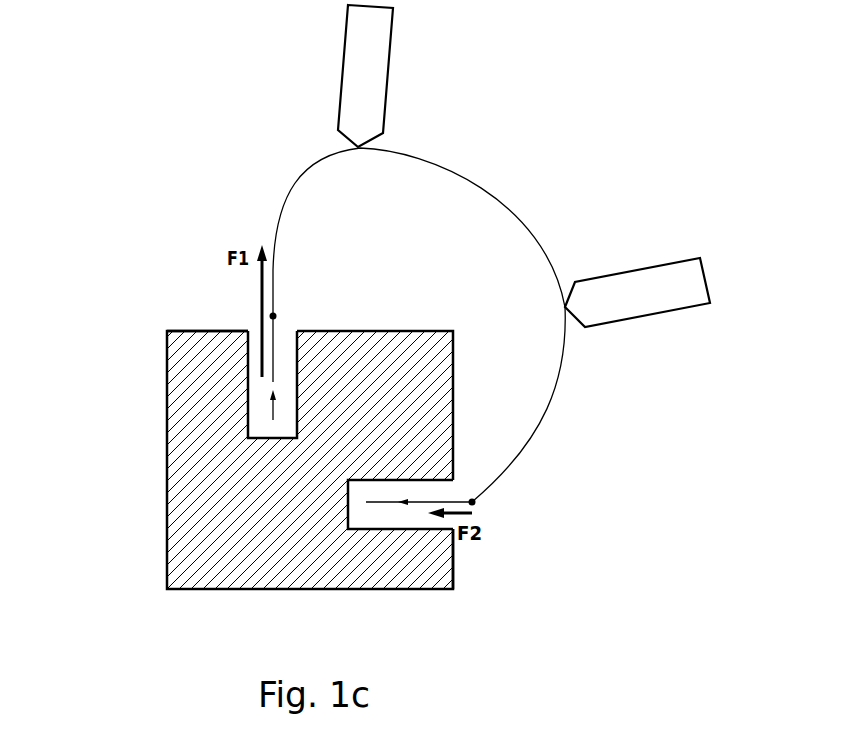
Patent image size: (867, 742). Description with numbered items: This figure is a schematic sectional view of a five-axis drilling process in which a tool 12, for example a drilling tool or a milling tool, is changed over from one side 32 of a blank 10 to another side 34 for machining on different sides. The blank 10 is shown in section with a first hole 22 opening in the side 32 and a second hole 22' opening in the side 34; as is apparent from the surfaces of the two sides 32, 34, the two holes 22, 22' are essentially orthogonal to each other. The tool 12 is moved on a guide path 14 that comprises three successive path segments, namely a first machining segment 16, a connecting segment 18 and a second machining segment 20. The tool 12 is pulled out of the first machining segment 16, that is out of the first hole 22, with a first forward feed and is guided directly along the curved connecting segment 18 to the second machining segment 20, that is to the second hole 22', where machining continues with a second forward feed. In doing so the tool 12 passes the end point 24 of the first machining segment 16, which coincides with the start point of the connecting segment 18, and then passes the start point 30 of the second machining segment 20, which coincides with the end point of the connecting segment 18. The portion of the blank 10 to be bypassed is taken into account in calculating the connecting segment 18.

The blank 10 is at (197, 495).
The tool 12 is at (362, 53).
The guide path 14 is at (486, 253).
The first machining segment 16 is at (273, 385).
The connecting segment 18 is at (437, 160).
The second machining segment 20 is at (419, 503).
The first hole 22 is at (184, 384).
The second hole 22' is at (400, 562).
The end point of the first machining segment 24 is at (273, 316).
The start point of the second machining segment 30 is at (477, 503).
The one side of the blank 32 is at (167, 331).
The another side of the blank 34 is at (472, 556).